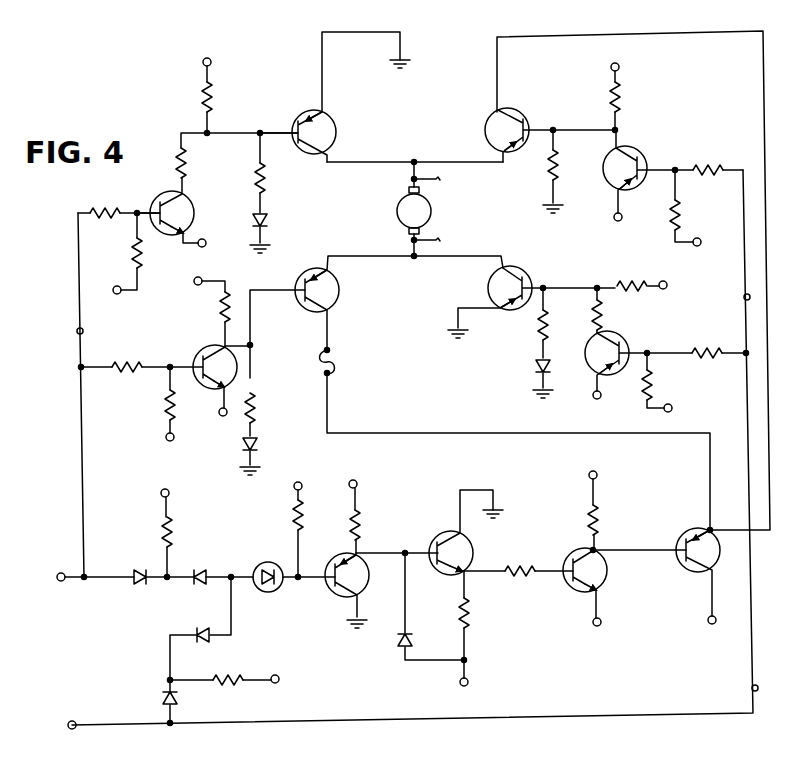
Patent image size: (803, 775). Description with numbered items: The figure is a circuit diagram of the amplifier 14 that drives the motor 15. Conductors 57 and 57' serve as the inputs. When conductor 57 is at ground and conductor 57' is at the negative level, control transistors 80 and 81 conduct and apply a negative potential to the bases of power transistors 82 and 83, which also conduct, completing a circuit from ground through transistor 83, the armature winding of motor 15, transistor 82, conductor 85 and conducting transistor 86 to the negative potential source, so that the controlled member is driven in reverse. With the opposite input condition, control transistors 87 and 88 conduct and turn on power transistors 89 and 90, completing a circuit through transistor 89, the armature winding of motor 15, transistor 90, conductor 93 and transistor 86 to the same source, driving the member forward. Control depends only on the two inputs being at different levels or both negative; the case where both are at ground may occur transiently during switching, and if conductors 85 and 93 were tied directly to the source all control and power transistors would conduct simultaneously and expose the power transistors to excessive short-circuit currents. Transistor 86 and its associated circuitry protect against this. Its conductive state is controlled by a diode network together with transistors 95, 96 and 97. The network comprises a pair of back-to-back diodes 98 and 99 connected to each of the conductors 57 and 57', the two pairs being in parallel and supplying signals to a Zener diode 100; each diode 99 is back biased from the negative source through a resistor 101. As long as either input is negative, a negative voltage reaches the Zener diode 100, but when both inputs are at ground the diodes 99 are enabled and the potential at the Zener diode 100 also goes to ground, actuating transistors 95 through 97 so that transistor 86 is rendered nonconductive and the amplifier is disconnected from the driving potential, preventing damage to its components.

The amplifier 14 is at (448, 70).
The motor 15 is at (404, 214).
The conductor 57 is at (77, 400).
The conductor 57' is at (389, 452).
The control transistor 80 is at (205, 350).
The control transistor 81 is at (186, 211).
The power transistor 82 is at (333, 290).
The power transistor 83 is at (328, 131).
The conductor 85 is at (448, 433).
The transistor 86 is at (700, 563).
The control transistor 87 is at (618, 340).
The control transistor 88 is at (628, 149).
The power transistor 89 is at (488, 289).
The power transistor 90 is at (505, 115).
The conductor 93 is at (763, 70).
The transistor 95 is at (580, 591).
The transistor 96 is at (445, 535).
The transistor 97 is at (345, 594).
The diode 98 is at (205, 570).
The diode 99 is at (136, 570).
The Zener diode 100 is at (271, 562).
The resistor 101 is at (163, 525).